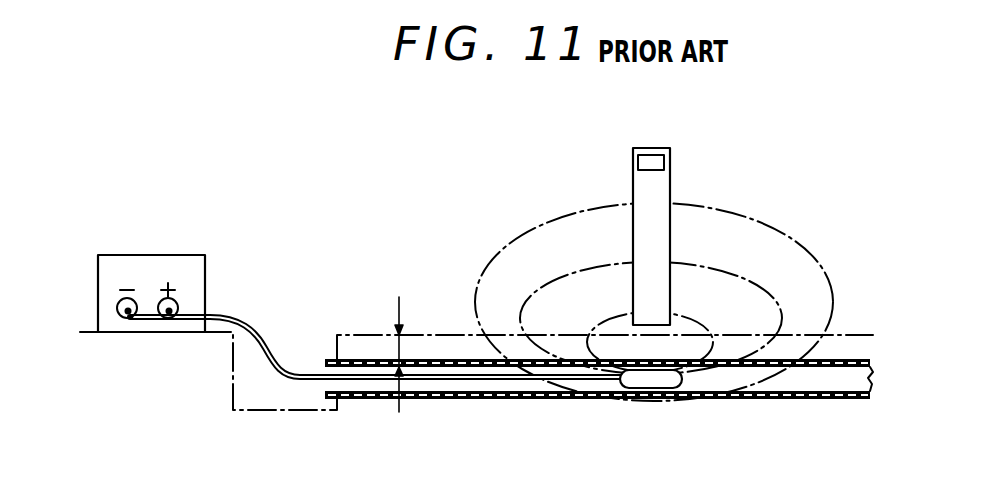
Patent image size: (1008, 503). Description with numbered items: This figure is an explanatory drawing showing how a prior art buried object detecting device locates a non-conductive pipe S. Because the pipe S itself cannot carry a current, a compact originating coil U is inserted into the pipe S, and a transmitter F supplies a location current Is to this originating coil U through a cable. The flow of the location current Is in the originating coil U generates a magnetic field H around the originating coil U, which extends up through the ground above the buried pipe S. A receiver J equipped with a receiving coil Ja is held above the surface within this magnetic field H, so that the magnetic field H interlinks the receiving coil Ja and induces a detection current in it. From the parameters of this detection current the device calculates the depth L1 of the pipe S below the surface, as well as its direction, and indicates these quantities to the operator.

The transmitter F is at (167, 270).
The location current Is is at (277, 343).
The depth L1 is at (397, 348).
The receiver J is at (636, 142).
The receiving coil Ja is at (662, 163).
The magnetic field H is at (810, 252).
The pipe S is at (461, 401).
The originating coil U is at (648, 384).